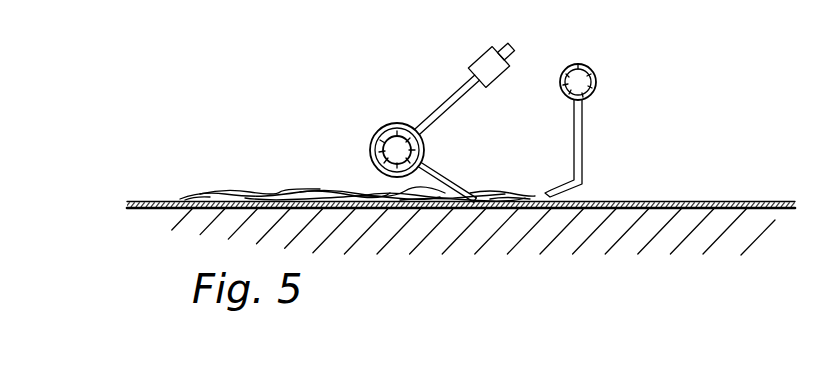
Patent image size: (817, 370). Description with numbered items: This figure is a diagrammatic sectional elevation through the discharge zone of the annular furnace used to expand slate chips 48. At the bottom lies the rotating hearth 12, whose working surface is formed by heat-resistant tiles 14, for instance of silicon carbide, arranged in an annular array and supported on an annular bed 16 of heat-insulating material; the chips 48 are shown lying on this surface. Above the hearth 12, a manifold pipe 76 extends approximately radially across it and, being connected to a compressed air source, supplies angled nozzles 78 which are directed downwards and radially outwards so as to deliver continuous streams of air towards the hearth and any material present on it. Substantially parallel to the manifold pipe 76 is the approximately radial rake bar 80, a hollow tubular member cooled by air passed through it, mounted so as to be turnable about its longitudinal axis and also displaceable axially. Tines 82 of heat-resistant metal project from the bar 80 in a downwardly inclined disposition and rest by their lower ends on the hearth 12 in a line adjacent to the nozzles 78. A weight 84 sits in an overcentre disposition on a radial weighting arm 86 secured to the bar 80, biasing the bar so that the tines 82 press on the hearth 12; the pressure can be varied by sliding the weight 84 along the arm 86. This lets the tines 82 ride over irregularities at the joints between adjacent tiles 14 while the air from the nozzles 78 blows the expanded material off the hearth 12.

The annular hearth 12 is at (746, 199).
The heat-resistant tiles 14 is at (665, 202).
The annular bed of heat-insulating material 16 is at (652, 226).
The slate chips 48 is at (258, 191).
The manifold pipe 76 is at (597, 82).
The angled nozzles 78 is at (585, 150).
The rake bar 80 is at (383, 135).
The tines 82 is at (440, 172).
The weight 84 is at (492, 72).
The radial weighting arm 86 is at (502, 44).